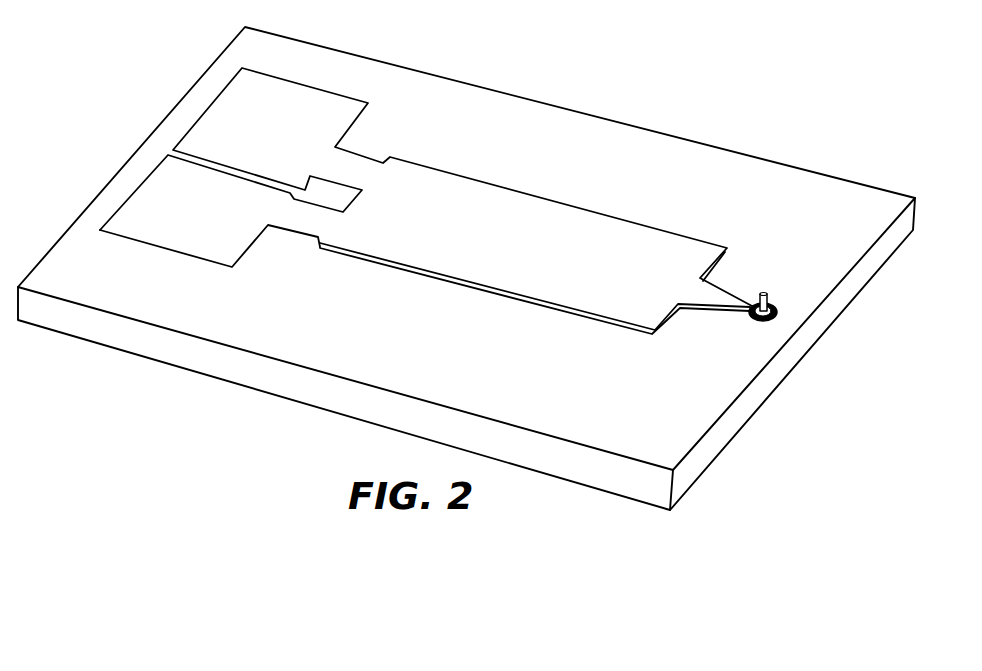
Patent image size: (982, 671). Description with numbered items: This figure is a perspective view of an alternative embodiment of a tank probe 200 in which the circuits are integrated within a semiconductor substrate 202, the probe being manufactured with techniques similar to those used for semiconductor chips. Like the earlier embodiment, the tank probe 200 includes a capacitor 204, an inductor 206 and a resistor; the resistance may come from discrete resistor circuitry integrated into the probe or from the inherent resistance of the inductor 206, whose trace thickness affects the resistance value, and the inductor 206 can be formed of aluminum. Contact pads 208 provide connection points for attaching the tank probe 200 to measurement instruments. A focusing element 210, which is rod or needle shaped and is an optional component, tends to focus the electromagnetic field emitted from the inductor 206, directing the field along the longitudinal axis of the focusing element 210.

The tank probe 200 is at (576, 80).
The semiconductor substrate 202 is at (722, 430).
The capacitor 204 is at (313, 259).
The inductor 206 is at (778, 309).
The contact pads 208 is at (168, 172).
The focusing element 210 is at (763, 293).